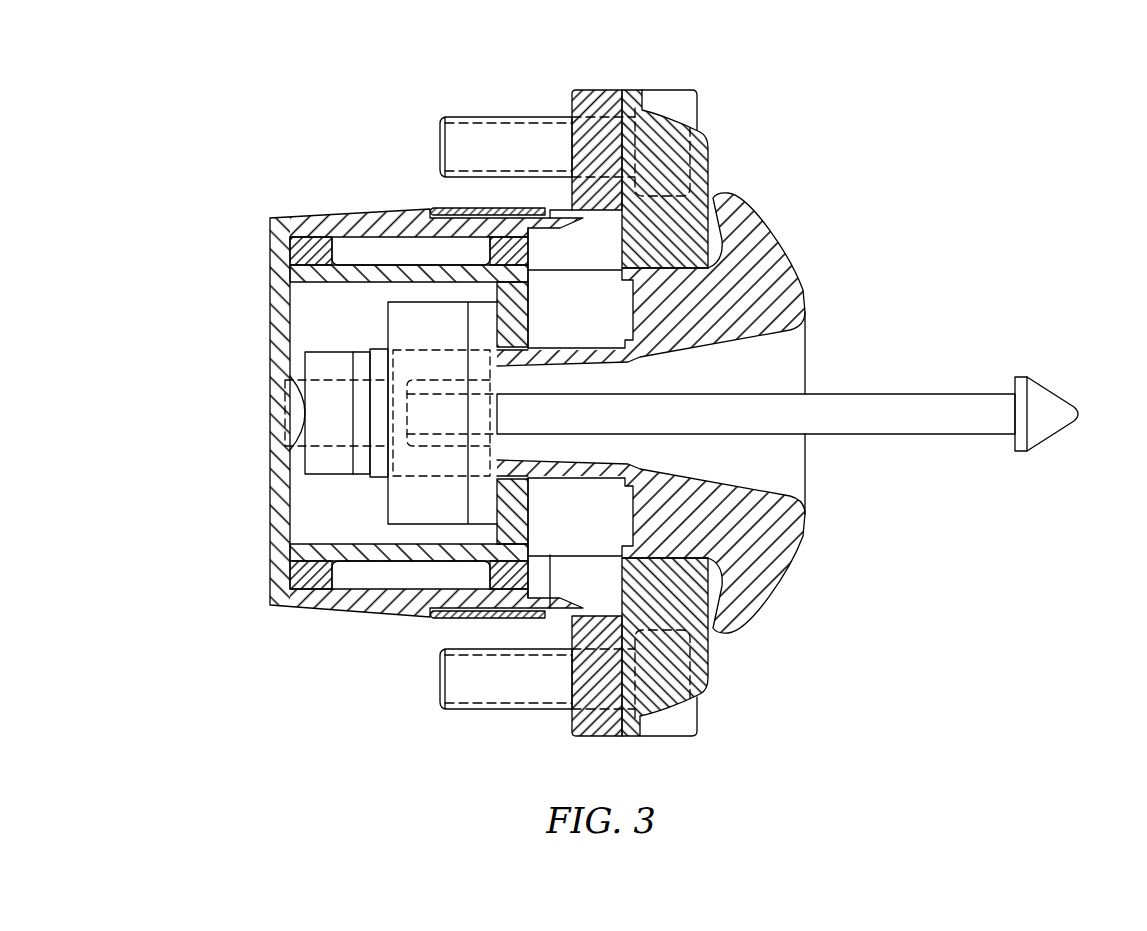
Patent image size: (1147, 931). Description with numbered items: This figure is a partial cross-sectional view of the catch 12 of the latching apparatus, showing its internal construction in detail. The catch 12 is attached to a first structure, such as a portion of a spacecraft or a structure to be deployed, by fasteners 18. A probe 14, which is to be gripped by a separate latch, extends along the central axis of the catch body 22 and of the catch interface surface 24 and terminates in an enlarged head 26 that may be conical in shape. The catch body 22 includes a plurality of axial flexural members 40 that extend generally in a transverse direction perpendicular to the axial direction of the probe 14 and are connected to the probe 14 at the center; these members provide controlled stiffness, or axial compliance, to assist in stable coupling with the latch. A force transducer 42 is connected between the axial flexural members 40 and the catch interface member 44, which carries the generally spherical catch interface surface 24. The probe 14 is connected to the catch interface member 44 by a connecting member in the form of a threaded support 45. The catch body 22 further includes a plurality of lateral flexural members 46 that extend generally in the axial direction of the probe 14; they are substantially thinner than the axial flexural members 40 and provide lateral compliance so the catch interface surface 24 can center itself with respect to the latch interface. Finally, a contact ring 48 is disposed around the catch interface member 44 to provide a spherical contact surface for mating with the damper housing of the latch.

The catch 12 is at (842, 103).
The probe 14 is at (818, 394).
The fasteners 18 is at (507, 115).
The catch body 22 is at (315, 213).
The catch interface surface 24 is at (698, 413).
The enlarged head 26 is at (1050, 391).
The axial flexural members 40 is at (345, 413).
The force transducer 42 is at (607, 335).
The catch interface member 44 is at (777, 289).
The threaded support 45 is at (343, 478).
The lateral flexural members 46 is at (463, 208).
The contact ring 48 is at (660, 123).